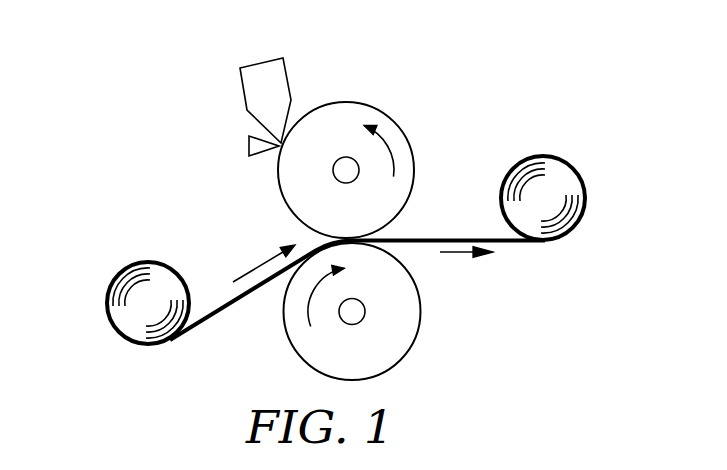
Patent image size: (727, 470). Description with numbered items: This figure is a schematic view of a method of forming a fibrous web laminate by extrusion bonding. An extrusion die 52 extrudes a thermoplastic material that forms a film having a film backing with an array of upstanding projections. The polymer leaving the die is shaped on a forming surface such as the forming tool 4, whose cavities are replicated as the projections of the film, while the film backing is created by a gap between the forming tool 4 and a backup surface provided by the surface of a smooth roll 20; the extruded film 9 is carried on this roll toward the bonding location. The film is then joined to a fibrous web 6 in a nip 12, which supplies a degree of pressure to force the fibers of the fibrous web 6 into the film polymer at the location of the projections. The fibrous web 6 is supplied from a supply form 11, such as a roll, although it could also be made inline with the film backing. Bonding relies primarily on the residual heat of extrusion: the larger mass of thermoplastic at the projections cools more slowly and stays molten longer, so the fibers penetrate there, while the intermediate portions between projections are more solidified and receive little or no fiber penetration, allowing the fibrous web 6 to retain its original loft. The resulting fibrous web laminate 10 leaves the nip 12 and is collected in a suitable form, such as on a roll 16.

The forming tool 4 is at (256, 158).
The fibrous web 6 is at (223, 306).
The coating layer 9 is at (281, 143).
The fibrous web laminate 10 is at (508, 243).
The supply form 11 is at (107, 318).
The nip 12 is at (352, 240).
The roll 16 is at (566, 162).
The smooth roll 20 is at (382, 112).
The extrusion die 52 is at (286, 62).